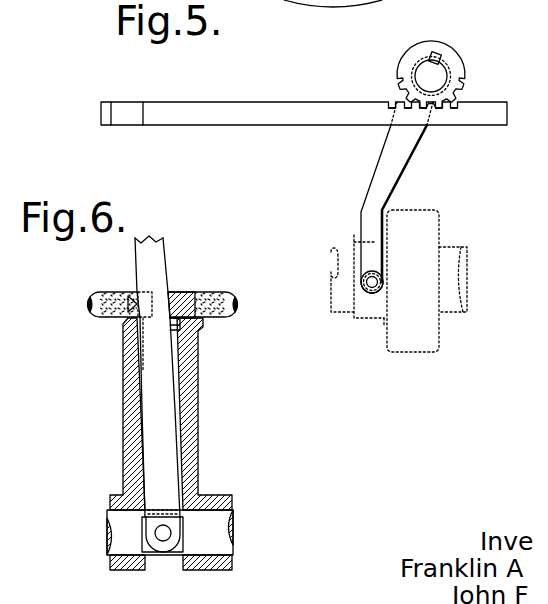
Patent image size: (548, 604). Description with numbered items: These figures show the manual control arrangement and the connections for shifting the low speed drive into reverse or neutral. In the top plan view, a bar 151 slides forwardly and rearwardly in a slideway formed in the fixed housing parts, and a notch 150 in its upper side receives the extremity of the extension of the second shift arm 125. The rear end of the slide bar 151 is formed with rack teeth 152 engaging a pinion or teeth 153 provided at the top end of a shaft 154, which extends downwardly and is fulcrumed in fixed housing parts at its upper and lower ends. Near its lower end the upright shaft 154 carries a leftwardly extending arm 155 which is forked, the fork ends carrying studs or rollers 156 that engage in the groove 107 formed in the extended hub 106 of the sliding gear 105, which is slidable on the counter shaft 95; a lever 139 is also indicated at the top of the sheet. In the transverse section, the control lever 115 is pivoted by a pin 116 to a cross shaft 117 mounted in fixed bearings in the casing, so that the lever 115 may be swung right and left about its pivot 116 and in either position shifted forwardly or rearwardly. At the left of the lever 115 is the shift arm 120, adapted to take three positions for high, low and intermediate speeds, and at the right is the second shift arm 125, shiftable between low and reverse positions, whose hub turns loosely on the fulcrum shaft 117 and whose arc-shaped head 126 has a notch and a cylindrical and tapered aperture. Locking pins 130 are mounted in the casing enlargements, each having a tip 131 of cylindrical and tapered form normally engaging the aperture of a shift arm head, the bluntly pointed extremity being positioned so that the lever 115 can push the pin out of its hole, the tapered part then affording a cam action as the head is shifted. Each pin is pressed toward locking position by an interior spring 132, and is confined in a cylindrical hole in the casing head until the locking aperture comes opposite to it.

In FIG. 5, the lever 139 is at (268, 0).
In FIG. 5, the notch 150 is at (126, 112).
In FIG. 5, the bar 151 is at (246, 112).
In FIG. 5, the rack teeth 152 is at (400, 101).
In FIG. 5, the pinion or teeth 153 is at (455, 97).
In FIG. 5, the shaft 154 is at (435, 72).
In FIG. 5, the arm 155 is at (400, 157).
In FIG. 5, the studs or rollers 156 is at (369, 279).
In FIG. 5, the sliding gear 105 is at (425, 219).
In FIG. 5, the counter shaft 95 is at (455, 262).
In FIG. 5, the extended hub 106 is at (357, 323).
In FIG. 5, the groove 107 is at (371, 318).
In FIG. 6, the lever 115 is at (157, 252).
In FIG. 6, the pin 116 is at (252, 520).
In FIG. 6, the cross shaft 117 is at (76, 552).
In FIG. 6, the shift arm 120 is at (128, 397).
In FIG. 6, the second shift arm 125 is at (195, 417).
In FIG. 6, the arc-shaped head 126 is at (178, 291).
In FIG. 6, the locking pins 130 is at (72, 314).
In FIG. 6, the tip 131 is at (128, 300).
In FIG. 6, the interior spring 132 is at (262, 282).